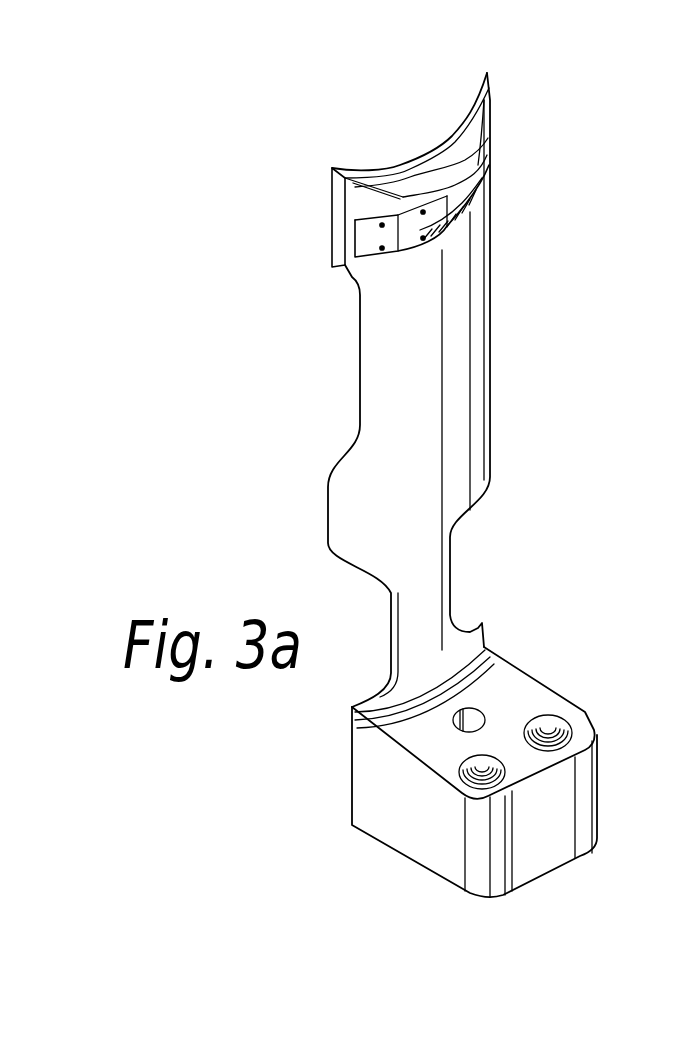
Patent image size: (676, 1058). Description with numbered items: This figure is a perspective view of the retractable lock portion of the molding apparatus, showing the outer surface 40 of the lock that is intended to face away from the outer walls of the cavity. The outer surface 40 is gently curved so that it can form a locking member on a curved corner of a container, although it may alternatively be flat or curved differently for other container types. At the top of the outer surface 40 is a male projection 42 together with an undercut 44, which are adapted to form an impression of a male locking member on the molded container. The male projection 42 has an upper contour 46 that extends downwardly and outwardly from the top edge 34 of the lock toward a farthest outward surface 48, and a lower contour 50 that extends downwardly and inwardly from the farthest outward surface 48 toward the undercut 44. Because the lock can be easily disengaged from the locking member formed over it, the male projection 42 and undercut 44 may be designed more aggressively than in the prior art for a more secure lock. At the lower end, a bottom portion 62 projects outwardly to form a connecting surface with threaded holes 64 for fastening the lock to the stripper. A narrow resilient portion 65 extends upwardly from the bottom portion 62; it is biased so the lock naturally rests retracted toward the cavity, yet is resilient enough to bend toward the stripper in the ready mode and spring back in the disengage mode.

The top edge 34 is at (426, 160).
The outer surface 40 is at (498, 334).
The male projection 42 is at (498, 122).
The undercut 44 is at (492, 165).
The upper contour 46 is at (412, 195).
The farthest outward surface 48 is at (468, 205).
The lower contour 50 is at (365, 262).
The bottom portion 62 is at (386, 816).
The threaded holes 64 is at (547, 727).
The resilient portion 65 is at (475, 578).